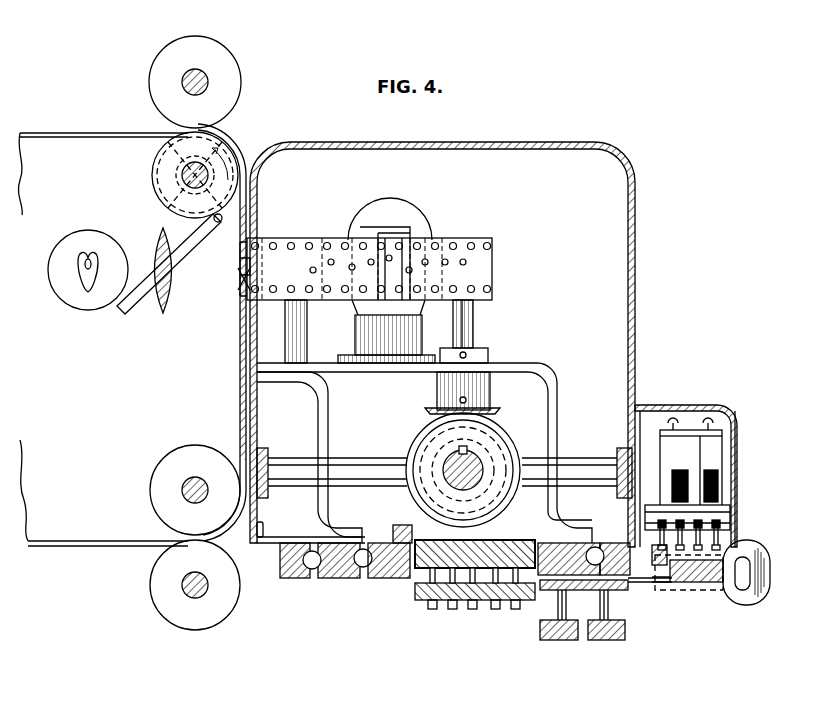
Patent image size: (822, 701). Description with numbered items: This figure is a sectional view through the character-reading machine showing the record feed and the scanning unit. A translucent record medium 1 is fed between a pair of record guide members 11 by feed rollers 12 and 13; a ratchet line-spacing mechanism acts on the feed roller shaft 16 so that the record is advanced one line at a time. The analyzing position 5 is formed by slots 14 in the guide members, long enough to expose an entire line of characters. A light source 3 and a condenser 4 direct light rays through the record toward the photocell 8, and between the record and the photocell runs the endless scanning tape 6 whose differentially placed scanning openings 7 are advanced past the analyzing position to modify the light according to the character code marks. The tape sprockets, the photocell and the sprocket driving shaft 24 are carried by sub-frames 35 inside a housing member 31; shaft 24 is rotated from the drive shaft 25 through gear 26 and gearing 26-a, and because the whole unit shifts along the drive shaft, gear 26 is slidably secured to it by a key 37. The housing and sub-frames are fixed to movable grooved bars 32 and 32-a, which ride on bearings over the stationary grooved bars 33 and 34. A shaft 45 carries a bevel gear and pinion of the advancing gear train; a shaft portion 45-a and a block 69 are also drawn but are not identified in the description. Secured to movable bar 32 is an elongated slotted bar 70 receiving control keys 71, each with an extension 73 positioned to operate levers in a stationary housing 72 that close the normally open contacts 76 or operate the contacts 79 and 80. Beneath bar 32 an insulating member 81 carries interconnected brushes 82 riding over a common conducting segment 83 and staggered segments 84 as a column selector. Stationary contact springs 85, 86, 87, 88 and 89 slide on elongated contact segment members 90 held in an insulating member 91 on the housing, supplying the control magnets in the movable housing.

The record medium 1 is at (130, 130).
The light source 3 is at (55, 285).
The condenser 4 is at (160, 300).
The analyzing position 5 is at (240, 263).
The scanning tape 6 is at (307, 240).
The scanning openings 7 is at (459, 246).
The photocell 8 is at (374, 200).
The record guide members 11 is at (249, 350).
The feed rollers 12 is at (246, 99).
The feed rollers 13 is at (213, 503).
The slots 14 is at (238, 272).
The feed roller shaft 16 is at (183, 178).
The driving shaft 24 is at (462, 318).
The drive shaft 25 is at (450, 472).
The gear 26 is at (490, 442).
The gearing 26-a is at (520, 401).
The housing member 31 is at (637, 180).
The grooved bar 32 is at (565, 543).
The grooved bar 32-a is at (335, 580).
The stationary grooved bar 33 is at (392, 580).
The stationary grooved bar 34 is at (283, 580).
The sub-frames 35 is at (329, 413).
The key 37 is at (460, 446).
The shaft 45 is at (378, 463).
The shaft extension 45-a is at (570, 462).
The spacer block 69 is at (393, 533).
The slotted bar 70 is at (712, 575).
The control keys 71 is at (750, 604).
The stationary housing 72 is at (738, 427).
The key extension 73 is at (688, 560).
The normally open contacts 76 is at (665, 490).
The contacts 79 is at (722, 490).
The contacts 80 is at (722, 472).
The insulating member 81 is at (660, 566).
The brushes 82 is at (622, 588).
The common conducting segment 83 is at (565, 641).
The conducting segments 84 is at (597, 641).
The contact spring 85 is at (432, 606).
The contact spring 86 is at (453, 606).
The contact spring 87 is at (472, 606).
The contact spring 88 is at (495, 606).
The contact spring 89 is at (515, 606).
The contact segment members 90 is at (441, 542).
The insulating member 91 is at (527, 540).